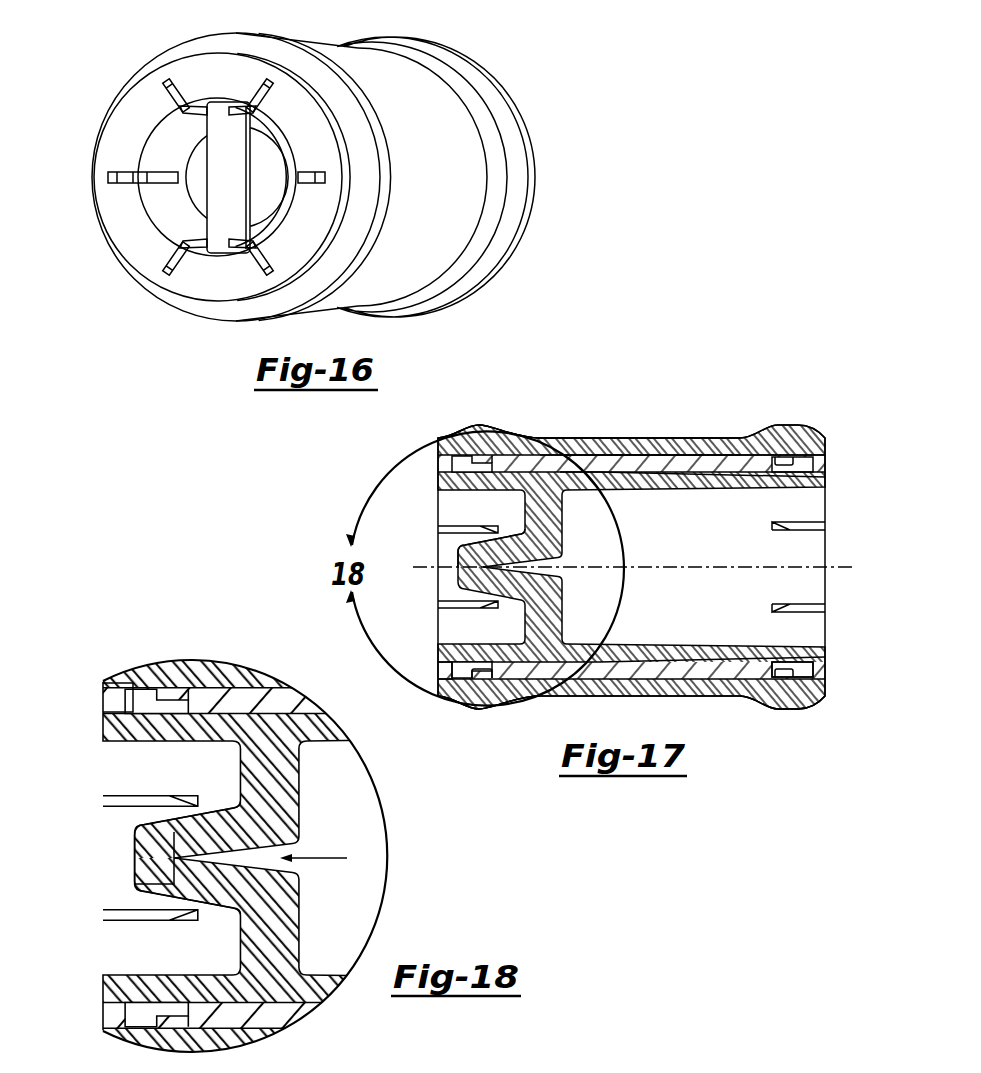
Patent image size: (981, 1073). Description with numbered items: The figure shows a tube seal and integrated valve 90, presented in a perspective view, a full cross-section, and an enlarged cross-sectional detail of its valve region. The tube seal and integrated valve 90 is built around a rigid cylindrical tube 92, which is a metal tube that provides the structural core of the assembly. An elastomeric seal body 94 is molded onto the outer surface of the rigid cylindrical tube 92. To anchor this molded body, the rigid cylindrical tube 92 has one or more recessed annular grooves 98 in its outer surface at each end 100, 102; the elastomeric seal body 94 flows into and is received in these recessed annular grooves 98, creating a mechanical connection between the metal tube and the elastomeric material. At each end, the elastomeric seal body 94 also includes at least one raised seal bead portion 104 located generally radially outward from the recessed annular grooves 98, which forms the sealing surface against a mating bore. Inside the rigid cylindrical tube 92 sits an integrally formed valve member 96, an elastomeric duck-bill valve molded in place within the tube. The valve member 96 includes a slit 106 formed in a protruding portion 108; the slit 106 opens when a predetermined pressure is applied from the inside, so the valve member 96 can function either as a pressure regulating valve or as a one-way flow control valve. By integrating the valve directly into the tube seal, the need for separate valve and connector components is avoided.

In FIG. 16, the tube seal and integrated valve 90 is at (91, 107).
In FIG. 17, the tube seal and integrated valve 90 is at (746, 376).
In FIG. 17, the rigid cylindrical tube 92 is at (697, 457).
In FIG. 18, the rigid cylindrical tube 92 is at (140, 695).
In FIG. 17, the elastomeric seal body 94 is at (646, 440).
In FIG. 17, the valve member 96 is at (476, 552).
In FIG. 18, the valve member 96 is at (138, 817).
In FIG. 17, the recessed annular grooves 98 is at (470, 703).
In FIG. 17, the end 100 is at (446, 657).
In FIG. 17, the end 102 is at (801, 659).
In FIG. 17, the raised seal bead portion 104 is at (481, 430).
In FIG. 18, the slit 106 is at (136, 856).
In FIG. 18, the protruding portion 108 is at (140, 905).